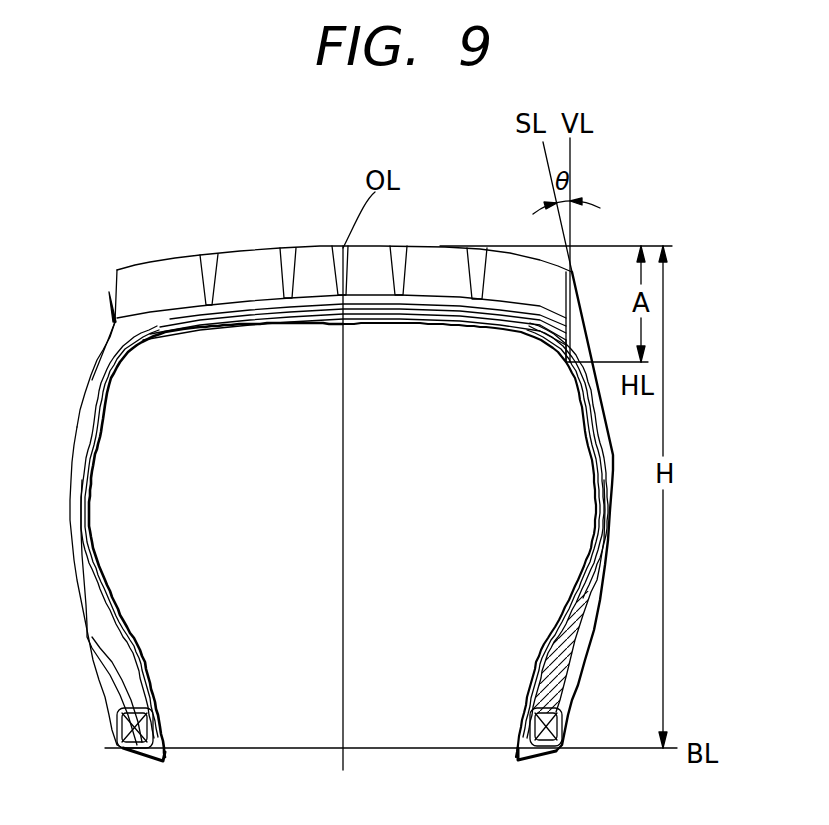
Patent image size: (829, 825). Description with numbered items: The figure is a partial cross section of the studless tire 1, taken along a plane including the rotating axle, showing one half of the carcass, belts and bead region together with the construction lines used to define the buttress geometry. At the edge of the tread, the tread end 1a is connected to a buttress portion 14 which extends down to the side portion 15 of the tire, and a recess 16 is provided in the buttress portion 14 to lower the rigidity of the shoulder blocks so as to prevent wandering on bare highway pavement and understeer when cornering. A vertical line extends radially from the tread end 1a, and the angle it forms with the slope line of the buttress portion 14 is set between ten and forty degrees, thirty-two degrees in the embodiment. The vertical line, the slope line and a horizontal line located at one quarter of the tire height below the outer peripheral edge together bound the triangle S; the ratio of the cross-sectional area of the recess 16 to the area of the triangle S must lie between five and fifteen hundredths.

The studless tire 1 is at (317, 276).
The tread end 1a is at (117, 268).
The buttress portion 14 is at (72, 383).
The side portion 15 is at (82, 445).
The recess 16 is at (112, 320).
The triangle S is at (115, 322).